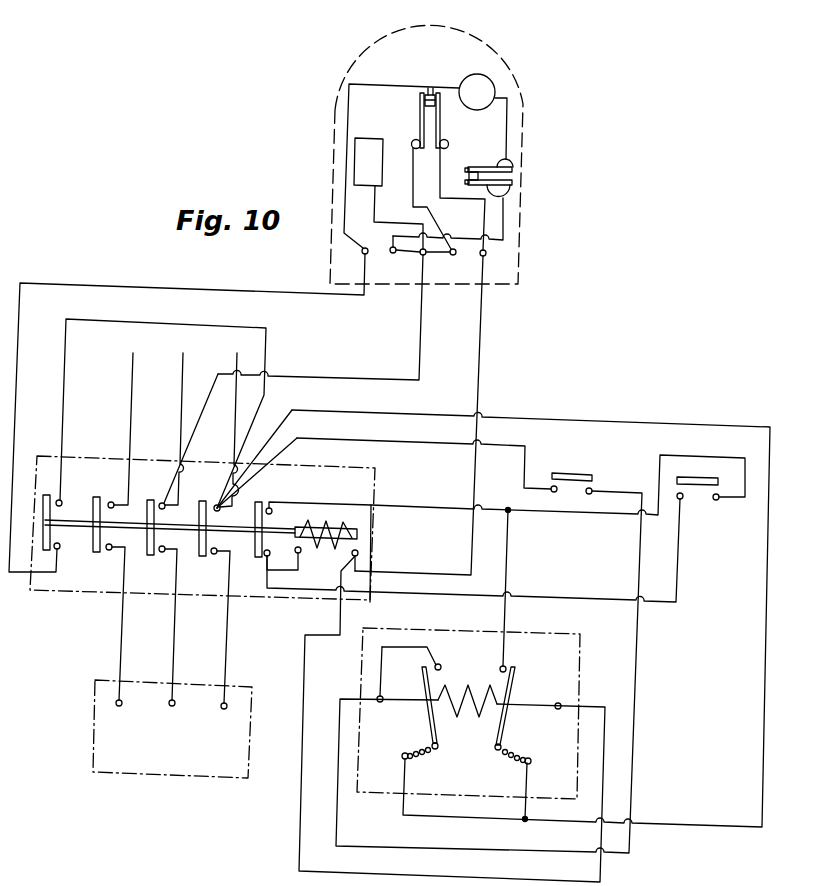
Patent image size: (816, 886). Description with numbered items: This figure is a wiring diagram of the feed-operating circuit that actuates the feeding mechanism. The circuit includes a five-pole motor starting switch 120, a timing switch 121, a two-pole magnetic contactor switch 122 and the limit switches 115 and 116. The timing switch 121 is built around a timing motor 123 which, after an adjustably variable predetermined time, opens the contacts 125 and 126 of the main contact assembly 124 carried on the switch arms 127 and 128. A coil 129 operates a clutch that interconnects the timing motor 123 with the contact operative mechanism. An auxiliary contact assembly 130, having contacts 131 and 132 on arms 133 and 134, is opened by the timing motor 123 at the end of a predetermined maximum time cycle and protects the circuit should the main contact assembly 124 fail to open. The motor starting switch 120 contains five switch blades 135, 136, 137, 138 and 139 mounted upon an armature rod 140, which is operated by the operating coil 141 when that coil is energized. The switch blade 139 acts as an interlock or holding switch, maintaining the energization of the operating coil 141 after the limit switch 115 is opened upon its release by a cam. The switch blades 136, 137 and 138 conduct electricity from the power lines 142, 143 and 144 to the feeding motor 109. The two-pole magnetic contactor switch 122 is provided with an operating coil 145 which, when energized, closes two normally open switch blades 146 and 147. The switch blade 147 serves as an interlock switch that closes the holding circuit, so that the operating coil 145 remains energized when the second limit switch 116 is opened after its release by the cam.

The feeding motor 109 is at (95, 718).
The limit switch 115 is at (700, 477).
The limit switch 116 is at (572, 477).
The five-pole motor starting switch 120 is at (90, 455).
The timing switch 121 is at (515, 178).
The two-pole magnetic contactor switch 122 is at (568, 637).
The timing motor 123 is at (496, 85).
The main contact assembly 124 is at (424, 100).
The contact 125 is at (428, 90).
The contact 126 is at (434, 90).
The switch arm 127 is at (420, 120).
The switch arm 128 is at (440, 119).
The coil 129 is at (358, 163).
The auxiliary contact assembly 130 is at (478, 167).
The contact 131 is at (468, 169).
The contact 132 is at (468, 182).
The arm 133 is at (513, 165).
The arm 134 is at (510, 196).
The switch blade 135 is at (43, 496).
The switch blade 136 is at (96, 498).
The switch blade 137 is at (150, 501).
The switch blade 138 is at (202, 501).
The switch blade 139 is at (258, 503).
The armature rod 140 is at (300, 528).
The operating coil 141 is at (346, 528).
The power line 142 is at (148, 343).
The power line 143 is at (198, 343).
The power line 144 is at (250, 343).
The operating coil 145 is at (472, 684).
The switch blade 146 is at (518, 678).
The switch blade 147 is at (428, 684).